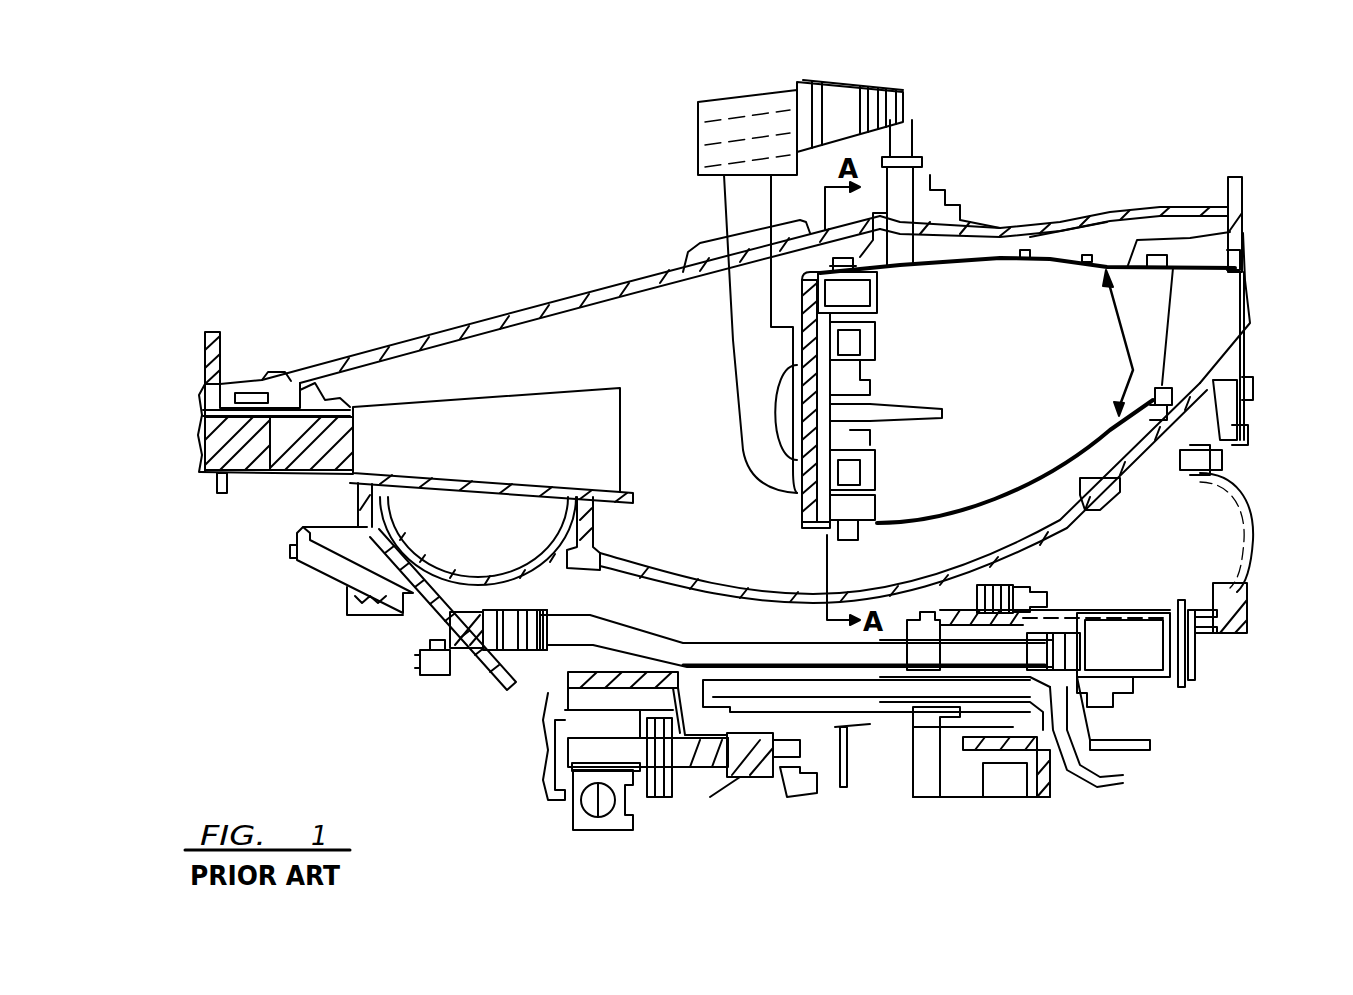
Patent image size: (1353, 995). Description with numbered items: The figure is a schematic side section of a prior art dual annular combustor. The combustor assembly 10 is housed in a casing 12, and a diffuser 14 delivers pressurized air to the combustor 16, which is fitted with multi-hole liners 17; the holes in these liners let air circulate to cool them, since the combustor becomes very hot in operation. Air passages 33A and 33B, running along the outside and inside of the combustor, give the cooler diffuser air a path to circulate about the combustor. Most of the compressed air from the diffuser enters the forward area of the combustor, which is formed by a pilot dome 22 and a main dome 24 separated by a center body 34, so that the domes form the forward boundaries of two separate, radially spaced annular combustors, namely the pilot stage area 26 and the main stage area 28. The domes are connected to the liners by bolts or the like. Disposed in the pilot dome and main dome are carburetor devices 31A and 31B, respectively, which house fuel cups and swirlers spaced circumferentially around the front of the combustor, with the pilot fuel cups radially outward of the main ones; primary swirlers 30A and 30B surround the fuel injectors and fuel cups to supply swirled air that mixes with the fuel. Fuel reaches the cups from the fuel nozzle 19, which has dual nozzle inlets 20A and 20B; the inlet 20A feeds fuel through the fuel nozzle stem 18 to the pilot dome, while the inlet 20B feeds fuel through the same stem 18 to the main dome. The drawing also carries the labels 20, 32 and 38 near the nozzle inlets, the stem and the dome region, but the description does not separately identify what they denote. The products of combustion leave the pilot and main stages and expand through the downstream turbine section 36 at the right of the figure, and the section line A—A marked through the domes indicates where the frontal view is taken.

The combustor assembly 10 is at (386, 288).
The casing 12 is at (555, 304).
The diffuser 14 is at (552, 458).
The combustor 16 is at (1047, 252).
The multi-hole liners 17 is at (1130, 375).
The fuel nozzle stem 18 is at (757, 337).
The fuel nozzle 19 is at (760, 92).
The fuel connector 20 is at (903, 112).
The nozzle inlet 20A is at (893, 87).
The nozzle inlet 20B is at (907, 120).
The pilot dome 22 is at (873, 300).
The main dome 24 is at (878, 506).
The pilot stage area 26 is at (1040, 351).
The main stage area 28 is at (1030, 462).
The primary swirler 30A is at (808, 254).
The primary swirler 30B is at (807, 527).
The carburetor device 31A is at (878, 348).
The carburetor device 31B is at (878, 466).
The fuel nozzle stem 32 is at (799, 495).
The air passage 33A is at (953, 549).
The air passage 33B is at (1037, 245).
The center body 34 is at (917, 423).
The turbine section 36 is at (1251, 317).
The fuel passage 38 is at (795, 390).